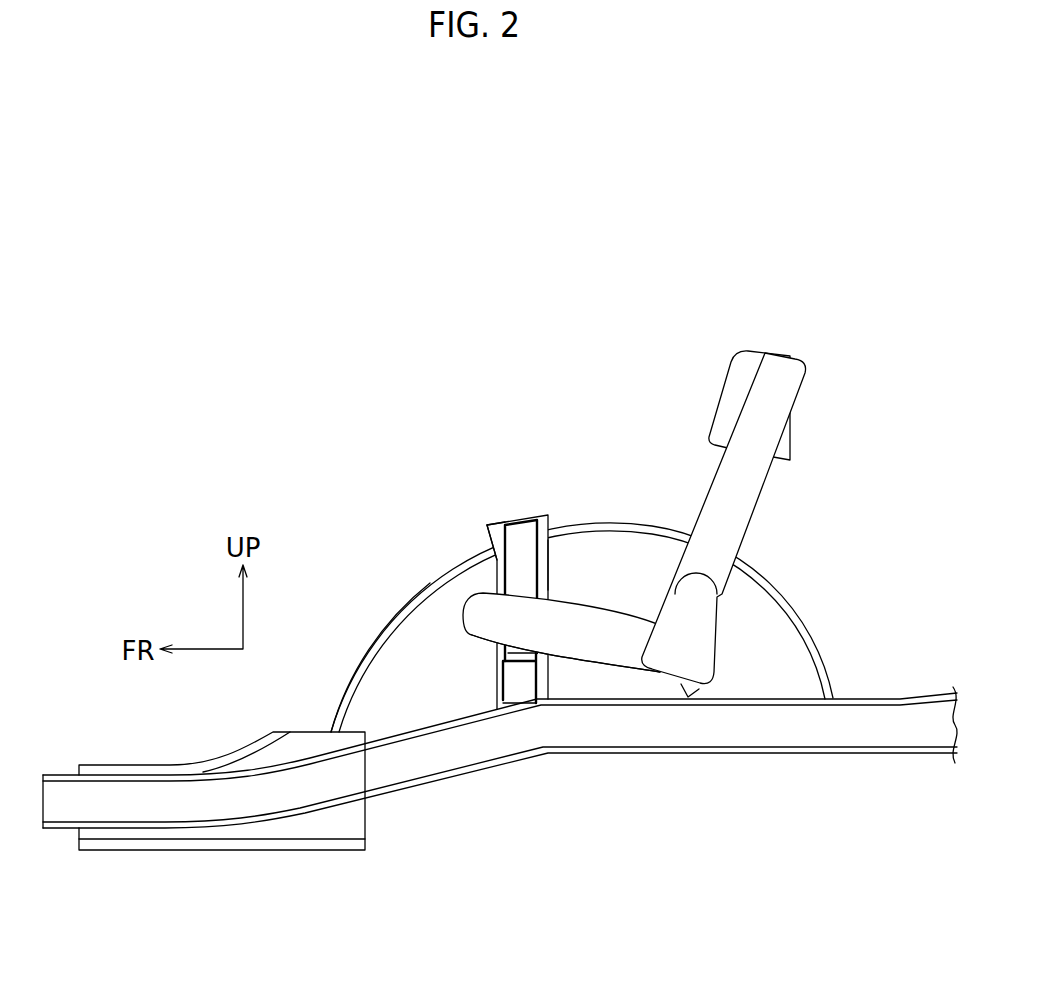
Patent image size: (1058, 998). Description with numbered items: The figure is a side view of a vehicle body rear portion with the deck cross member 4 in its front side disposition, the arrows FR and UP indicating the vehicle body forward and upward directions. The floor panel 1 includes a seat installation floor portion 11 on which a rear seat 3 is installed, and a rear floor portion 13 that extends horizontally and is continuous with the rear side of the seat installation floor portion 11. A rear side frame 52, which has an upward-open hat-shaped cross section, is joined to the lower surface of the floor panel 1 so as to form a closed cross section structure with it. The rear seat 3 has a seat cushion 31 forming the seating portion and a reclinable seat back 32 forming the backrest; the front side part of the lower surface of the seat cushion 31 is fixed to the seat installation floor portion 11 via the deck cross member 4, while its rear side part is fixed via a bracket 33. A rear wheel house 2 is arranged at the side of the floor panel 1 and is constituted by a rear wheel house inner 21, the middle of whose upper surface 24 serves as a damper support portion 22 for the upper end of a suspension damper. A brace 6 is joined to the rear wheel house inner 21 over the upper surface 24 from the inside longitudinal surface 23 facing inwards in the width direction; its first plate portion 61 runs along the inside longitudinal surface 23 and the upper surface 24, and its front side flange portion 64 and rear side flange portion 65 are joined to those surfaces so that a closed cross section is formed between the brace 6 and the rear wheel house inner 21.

The floor panel 1 is at (503, 726).
The rear floor portion 13 is at (898, 698).
The rear side frame 52 is at (788, 730).
The rear wheel house 2 is at (570, 580).
The rear wheel house inner 21 is at (582, 631).
The inside longitudinal surface 23 is at (420, 663).
The rear seat 3 is at (743, 544).
The seat back 32 is at (740, 496).
The bracket 33 is at (683, 690).
The seat cushion 31 is at (562, 692).
The seat installation floor portion 11 is at (601, 697).
The brace 6 is at (487, 561).
The damper support portion 22 is at (520, 537).
The upper surface 24 is at (483, 545).
The first plate portion 61 is at (515, 577).
The front side flange portion 64 is at (489, 523).
The rear side flange portion 65 is at (550, 585).
The deck cross member 4 is at (491, 682).